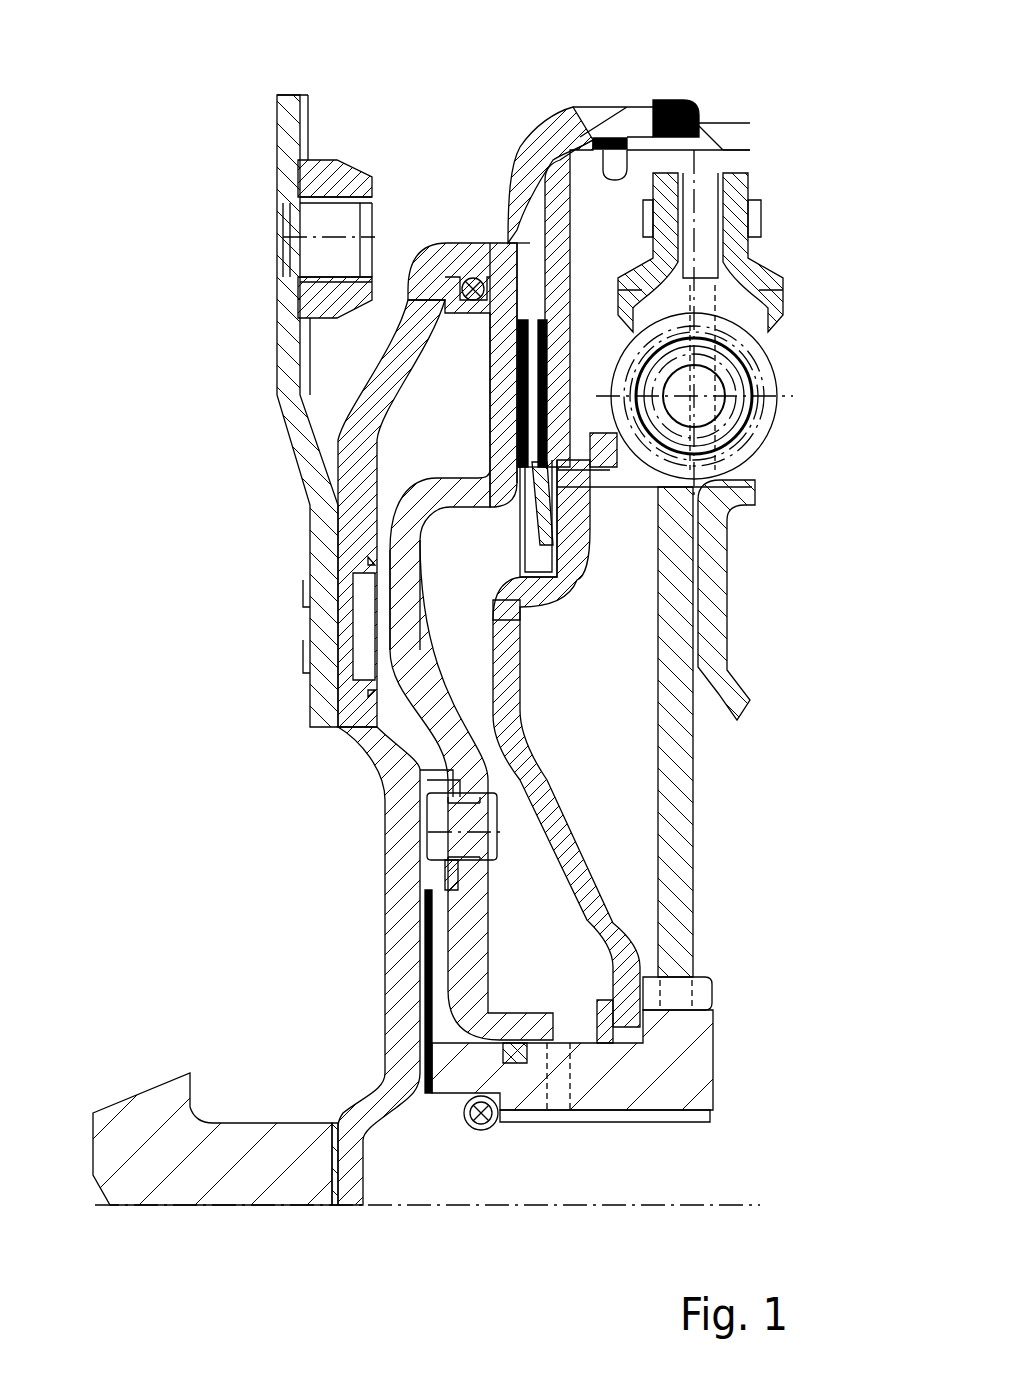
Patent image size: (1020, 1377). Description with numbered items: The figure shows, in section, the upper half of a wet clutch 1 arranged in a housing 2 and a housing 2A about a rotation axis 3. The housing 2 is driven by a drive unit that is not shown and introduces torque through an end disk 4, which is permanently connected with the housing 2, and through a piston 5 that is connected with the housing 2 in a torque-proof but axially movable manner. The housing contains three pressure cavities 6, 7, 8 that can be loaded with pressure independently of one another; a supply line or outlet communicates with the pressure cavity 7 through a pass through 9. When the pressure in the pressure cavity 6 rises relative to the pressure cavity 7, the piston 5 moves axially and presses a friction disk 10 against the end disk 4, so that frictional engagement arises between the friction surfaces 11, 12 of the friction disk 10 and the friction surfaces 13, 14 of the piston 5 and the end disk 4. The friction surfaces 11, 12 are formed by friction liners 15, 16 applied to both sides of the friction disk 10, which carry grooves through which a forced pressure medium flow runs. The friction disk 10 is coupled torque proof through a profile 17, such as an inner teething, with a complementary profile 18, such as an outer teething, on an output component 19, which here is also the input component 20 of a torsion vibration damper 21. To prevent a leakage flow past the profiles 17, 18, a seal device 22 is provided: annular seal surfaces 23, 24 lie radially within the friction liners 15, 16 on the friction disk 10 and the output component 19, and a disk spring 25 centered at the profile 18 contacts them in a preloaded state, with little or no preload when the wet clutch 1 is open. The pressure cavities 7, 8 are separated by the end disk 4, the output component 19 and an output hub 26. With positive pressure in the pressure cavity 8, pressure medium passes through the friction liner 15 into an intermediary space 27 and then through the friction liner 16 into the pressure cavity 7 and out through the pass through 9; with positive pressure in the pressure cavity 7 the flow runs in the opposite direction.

The wet clutch 1 is at (418, 108).
The housing 2 is at (395, 397).
The housing 2A is at (731, 130).
The rotation axis 3 is at (625, 1210).
The end disk 4 is at (772, 290).
The piston 5 is at (415, 550).
The pressure cavity 6 is at (460, 424).
The pressure cavity 7 is at (466, 632).
The pressure cavity 8 is at (615, 246).
The pass through 9 is at (560, 1090).
The friction disk 10 is at (753, 482).
The friction surface 11 is at (513, 350).
The friction surface 12 is at (560, 332).
The friction surface 13 is at (560, 380).
The friction surface 14 is at (518, 445).
The friction liner 15 is at (527, 290).
The friction liner 16 is at (470, 285).
The profile 17 is at (698, 580).
The complementary profile 18 is at (703, 555).
The output component 19 is at (560, 765).
The input component 20 is at (560, 850).
The torsion vibration damper 21 is at (772, 258).
The seal device 22 is at (516, 513).
The annular seal surface 23 is at (558, 478).
The annular seal surface 24 is at (543, 521).
The disk spring 25 is at (752, 512).
The output hub 26 is at (700, 1117).
The intermediary space 27 is at (500, 245).